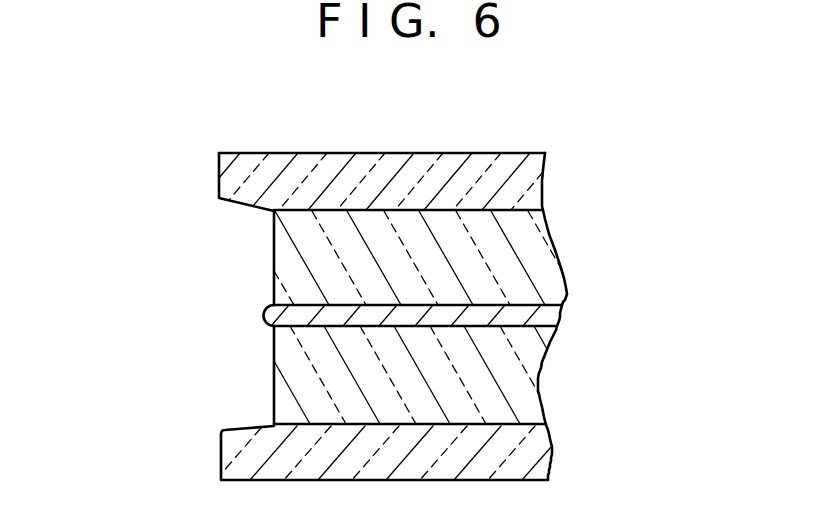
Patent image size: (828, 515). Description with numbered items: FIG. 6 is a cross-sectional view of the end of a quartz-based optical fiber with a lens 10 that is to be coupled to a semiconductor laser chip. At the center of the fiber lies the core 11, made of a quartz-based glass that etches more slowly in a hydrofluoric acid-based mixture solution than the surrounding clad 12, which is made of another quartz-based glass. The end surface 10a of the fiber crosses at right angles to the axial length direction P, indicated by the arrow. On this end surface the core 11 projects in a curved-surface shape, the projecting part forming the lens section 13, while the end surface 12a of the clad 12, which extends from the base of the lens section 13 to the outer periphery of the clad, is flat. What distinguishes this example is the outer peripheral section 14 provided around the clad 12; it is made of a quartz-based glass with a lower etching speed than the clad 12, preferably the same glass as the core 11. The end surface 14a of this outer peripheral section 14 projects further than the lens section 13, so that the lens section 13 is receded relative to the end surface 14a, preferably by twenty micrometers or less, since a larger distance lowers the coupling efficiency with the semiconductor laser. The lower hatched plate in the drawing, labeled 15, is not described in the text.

The optical fiber 10 is at (489, 142).
The end surface 10a is at (205, 270).
The core 11 is at (547, 318).
The clad 12 is at (547, 255).
The end surface 12a is at (274, 253).
The lens section 13 is at (263, 316).
The outer peripheral section 14 is at (520, 185).
The end surface 14a is at (219, 180).
The lower cover plate 15 is at (386, 453).
The axial length direction P is at (618, 316).